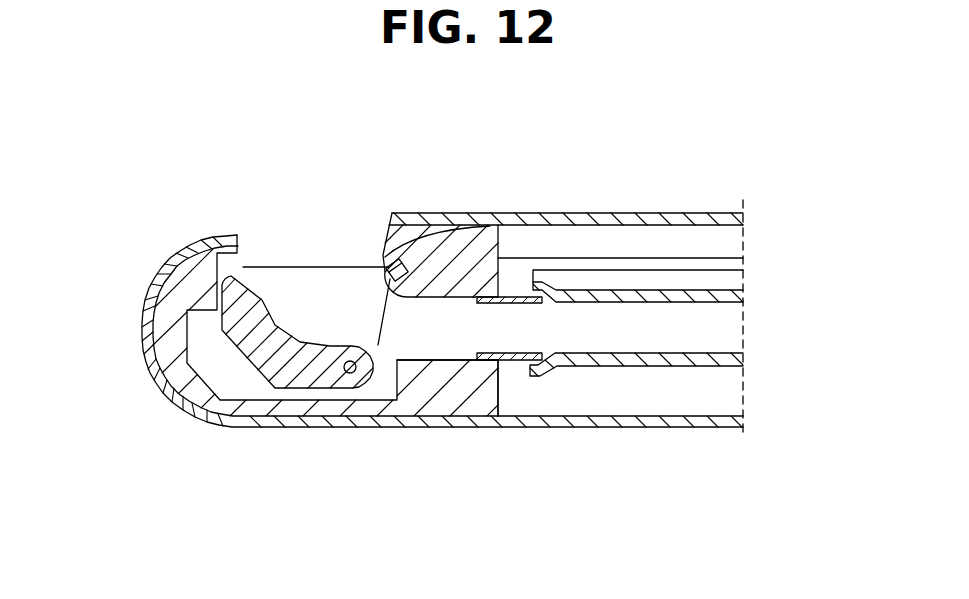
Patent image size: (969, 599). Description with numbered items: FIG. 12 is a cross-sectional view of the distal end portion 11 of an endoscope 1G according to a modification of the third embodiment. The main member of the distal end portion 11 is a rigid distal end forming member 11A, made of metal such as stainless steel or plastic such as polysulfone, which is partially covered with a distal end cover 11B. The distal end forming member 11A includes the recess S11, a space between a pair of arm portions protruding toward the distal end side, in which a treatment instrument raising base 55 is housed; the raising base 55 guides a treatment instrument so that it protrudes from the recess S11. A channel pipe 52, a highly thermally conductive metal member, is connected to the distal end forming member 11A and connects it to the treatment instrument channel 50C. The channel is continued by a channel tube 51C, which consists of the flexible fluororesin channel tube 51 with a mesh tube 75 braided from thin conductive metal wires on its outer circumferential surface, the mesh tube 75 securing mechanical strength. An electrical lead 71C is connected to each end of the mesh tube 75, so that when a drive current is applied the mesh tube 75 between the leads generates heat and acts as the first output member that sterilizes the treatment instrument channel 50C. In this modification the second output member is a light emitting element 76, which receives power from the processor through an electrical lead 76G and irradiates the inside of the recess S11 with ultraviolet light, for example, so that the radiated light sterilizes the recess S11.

The endoscope 1G is at (119, 187).
The recess S11 is at (346, 221).
The light emitting element 76 is at (490, 213).
The electrical lead 76G is at (527, 258).
The electrical lead 71C is at (637, 270).
The treatment instrument raising base 55 is at (182, 398).
The distal end forming member 11A is at (256, 427).
The distal end cover 11B is at (319, 427).
The distal end portion 11 is at (317, 483).
The channel tube 51 is at (590, 367).
The mesh tube 75 is at (710, 367).
The channel pipe 52 is at (503, 362).
The channel tube 51C is at (700, 485).
The treatment instrument channel 50C is at (678, 533).